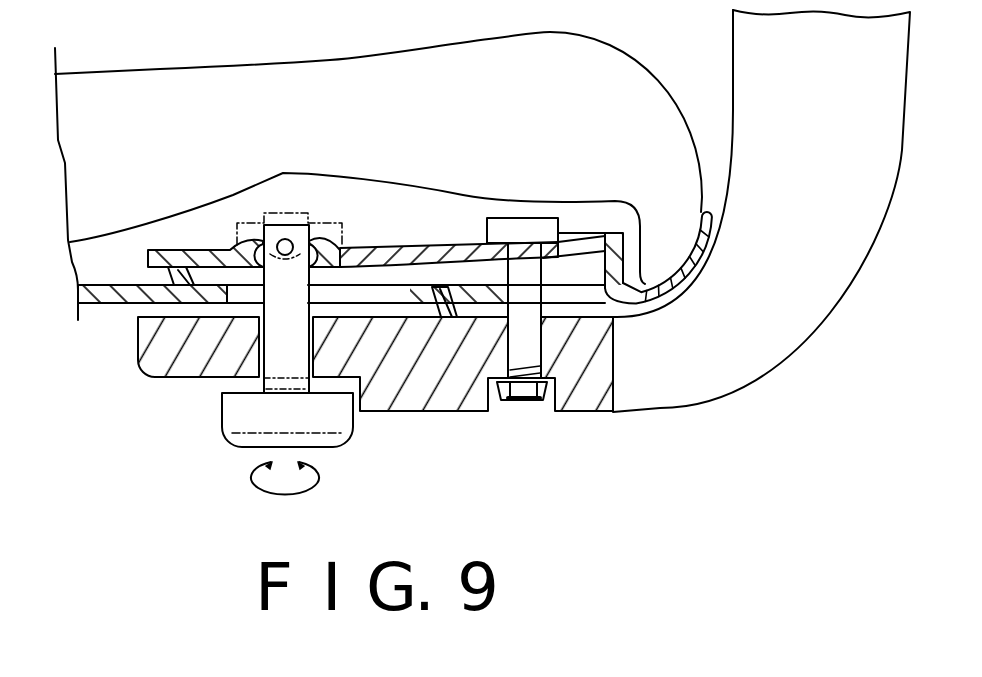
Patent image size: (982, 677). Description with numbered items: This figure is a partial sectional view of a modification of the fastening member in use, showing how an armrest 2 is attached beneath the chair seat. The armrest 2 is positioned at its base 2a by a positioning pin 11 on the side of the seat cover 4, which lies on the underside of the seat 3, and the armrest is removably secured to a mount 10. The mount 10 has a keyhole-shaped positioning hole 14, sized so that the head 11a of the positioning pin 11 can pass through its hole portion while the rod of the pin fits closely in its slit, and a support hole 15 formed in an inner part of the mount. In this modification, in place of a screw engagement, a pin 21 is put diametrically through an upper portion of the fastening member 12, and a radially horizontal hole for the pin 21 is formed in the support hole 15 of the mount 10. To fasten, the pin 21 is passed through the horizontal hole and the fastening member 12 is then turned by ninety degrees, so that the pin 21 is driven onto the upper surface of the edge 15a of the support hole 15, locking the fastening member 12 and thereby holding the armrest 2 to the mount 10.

The armrest 2 is at (765, 50).
The base 2a is at (433, 380).
The seat 3 is at (281, 87).
The seat cover 4 is at (110, 307).
The mount 10 is at (443, 253).
The positioning pin 11 is at (550, 331).
The head 11a is at (531, 228).
The fastening member 12 is at (254, 347).
The positioning hole 14 is at (588, 240).
The support hole 15 is at (238, 247).
The edge of the support hole 15a is at (336, 245).
The pin 21 is at (288, 239).